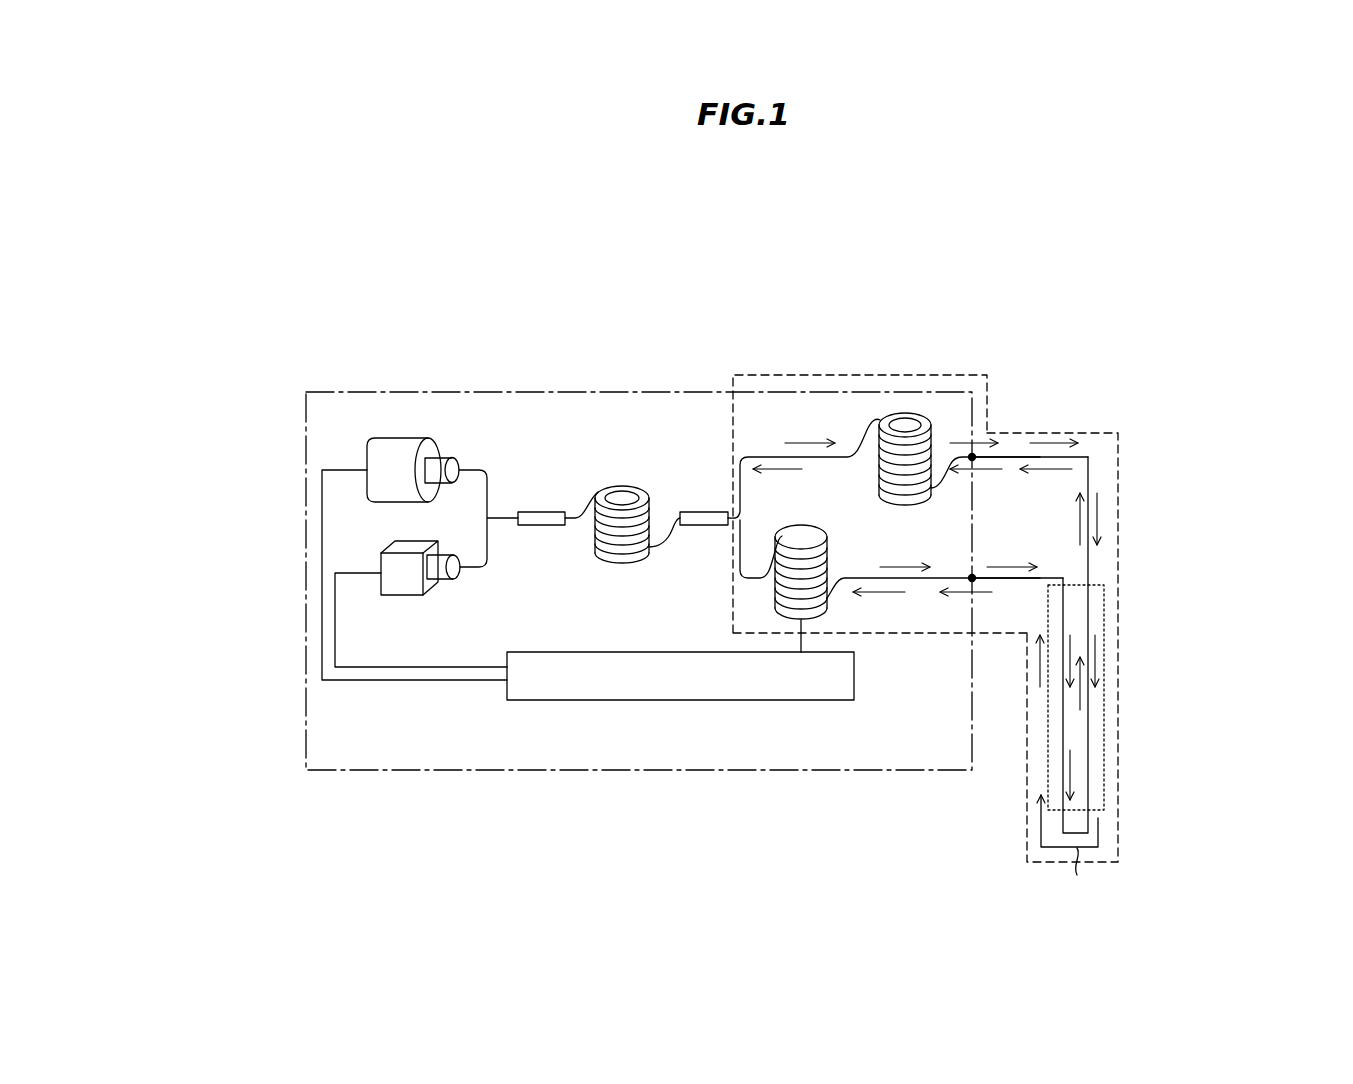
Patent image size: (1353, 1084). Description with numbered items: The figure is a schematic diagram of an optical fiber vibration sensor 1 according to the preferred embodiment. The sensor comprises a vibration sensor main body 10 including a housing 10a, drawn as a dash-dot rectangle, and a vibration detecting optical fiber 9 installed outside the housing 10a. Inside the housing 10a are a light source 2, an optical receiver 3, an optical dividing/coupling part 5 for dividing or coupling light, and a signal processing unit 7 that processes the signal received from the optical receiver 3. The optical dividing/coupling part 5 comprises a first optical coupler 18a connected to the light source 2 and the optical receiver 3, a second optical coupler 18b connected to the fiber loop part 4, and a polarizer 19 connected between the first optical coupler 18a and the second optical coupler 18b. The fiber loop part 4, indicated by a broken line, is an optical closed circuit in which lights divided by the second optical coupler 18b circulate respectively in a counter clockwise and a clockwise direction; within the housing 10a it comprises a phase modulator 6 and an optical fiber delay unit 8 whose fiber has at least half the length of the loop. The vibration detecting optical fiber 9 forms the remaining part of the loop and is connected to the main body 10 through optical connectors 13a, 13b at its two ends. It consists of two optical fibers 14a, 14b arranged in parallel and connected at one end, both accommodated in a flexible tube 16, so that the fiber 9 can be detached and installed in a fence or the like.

The optical fiber vibration sensor 1 is at (917, 225).
The light source 2 is at (367, 466).
The optical receiver 3 is at (381, 566).
The fiber loop part 4 is at (863, 370).
The optical dividing/coupling part 5 is at (385, 237).
The phase modulator 6 is at (789, 533).
The signal processing unit 7 is at (518, 700).
The optical fiber delay unit 8 is at (903, 414).
The vibration detecting optical fiber 9 is at (1092, 472).
The vibration sensor main body 10 is at (801, 779).
The housing 10a is at (357, 770).
The optical connector 13a is at (973, 456).
The optical connector 13b is at (974, 580).
The optical fiber 14a is at (1003, 457).
The optical fiber 14b is at (974, 578).
The flexible tube 16 is at (1104, 731).
The first optical coupler 18a is at (542, 512).
The second optical coupler 18b is at (700, 512).
The polarizer 19 is at (620, 487).